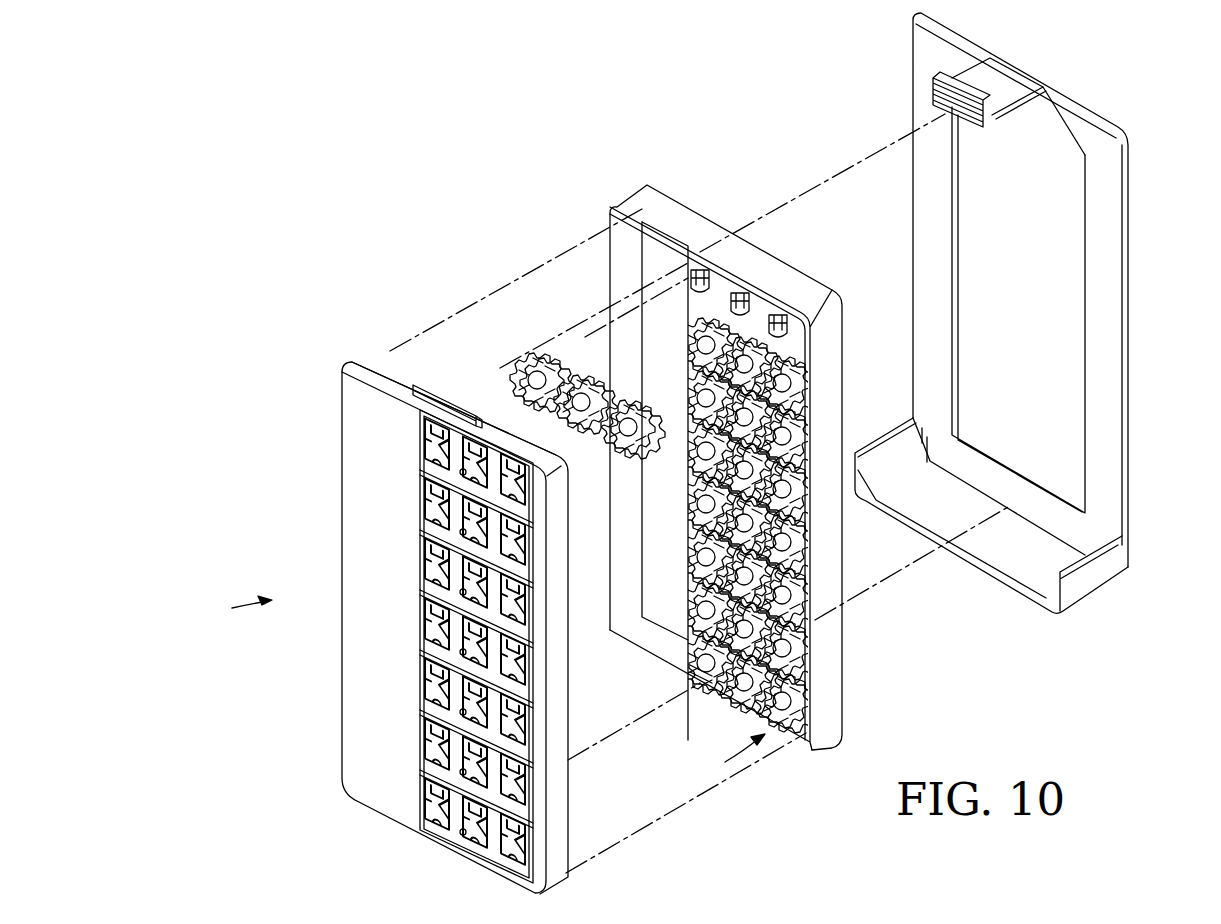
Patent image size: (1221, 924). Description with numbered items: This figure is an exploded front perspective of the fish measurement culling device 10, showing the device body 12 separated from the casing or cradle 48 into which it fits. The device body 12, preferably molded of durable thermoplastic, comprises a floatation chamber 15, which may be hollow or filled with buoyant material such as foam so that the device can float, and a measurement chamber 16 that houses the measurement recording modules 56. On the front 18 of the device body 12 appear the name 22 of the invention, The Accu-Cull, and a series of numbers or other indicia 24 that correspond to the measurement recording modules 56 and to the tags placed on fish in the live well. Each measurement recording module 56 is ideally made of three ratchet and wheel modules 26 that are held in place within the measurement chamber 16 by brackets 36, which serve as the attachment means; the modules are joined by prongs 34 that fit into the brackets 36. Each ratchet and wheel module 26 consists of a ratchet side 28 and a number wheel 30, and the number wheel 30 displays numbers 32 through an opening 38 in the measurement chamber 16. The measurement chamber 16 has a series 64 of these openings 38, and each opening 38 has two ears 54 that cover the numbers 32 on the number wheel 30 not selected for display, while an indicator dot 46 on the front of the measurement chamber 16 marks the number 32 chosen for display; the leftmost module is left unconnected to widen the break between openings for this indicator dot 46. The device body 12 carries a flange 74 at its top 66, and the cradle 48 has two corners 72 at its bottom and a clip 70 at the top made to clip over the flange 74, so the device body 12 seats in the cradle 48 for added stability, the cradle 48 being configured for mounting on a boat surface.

The fish measurement culling device 10 is at (236, 609).
The device body 12 is at (648, 198).
The floatation chamber 15 is at (625, 264).
The measurement chamber 16 is at (705, 310).
The front 18 is at (357, 440).
The name 22 is at (366, 659).
The indicia 24 is at (398, 792).
The ratchet and wheel module 26 is at (728, 756).
The ratchet side 28 is at (573, 360).
The number wheel 30 is at (530, 380).
The numbers 32 is at (716, 693).
The prongs 34 is at (650, 452).
The brackets 36 is at (786, 300).
The openings 38 is at (522, 858).
The indicator dot 46 is at (462, 843).
The cradle 48 is at (1128, 312).
The ears 54 is at (432, 456).
The measurement recording module 56 is at (809, 383).
The series of openings 64 is at (525, 803).
The top 66 is at (372, 356).
The clip 70 is at (968, 96).
The corners 72 is at (1112, 567).
The flange 74 is at (420, 388).